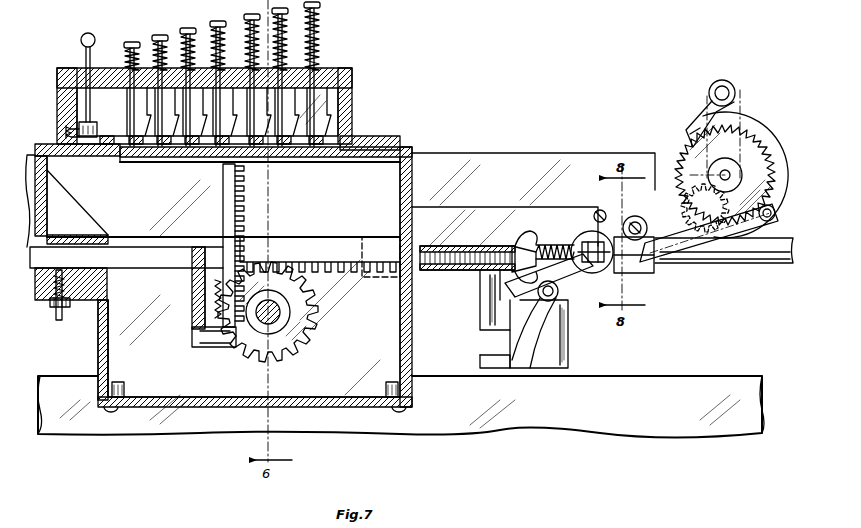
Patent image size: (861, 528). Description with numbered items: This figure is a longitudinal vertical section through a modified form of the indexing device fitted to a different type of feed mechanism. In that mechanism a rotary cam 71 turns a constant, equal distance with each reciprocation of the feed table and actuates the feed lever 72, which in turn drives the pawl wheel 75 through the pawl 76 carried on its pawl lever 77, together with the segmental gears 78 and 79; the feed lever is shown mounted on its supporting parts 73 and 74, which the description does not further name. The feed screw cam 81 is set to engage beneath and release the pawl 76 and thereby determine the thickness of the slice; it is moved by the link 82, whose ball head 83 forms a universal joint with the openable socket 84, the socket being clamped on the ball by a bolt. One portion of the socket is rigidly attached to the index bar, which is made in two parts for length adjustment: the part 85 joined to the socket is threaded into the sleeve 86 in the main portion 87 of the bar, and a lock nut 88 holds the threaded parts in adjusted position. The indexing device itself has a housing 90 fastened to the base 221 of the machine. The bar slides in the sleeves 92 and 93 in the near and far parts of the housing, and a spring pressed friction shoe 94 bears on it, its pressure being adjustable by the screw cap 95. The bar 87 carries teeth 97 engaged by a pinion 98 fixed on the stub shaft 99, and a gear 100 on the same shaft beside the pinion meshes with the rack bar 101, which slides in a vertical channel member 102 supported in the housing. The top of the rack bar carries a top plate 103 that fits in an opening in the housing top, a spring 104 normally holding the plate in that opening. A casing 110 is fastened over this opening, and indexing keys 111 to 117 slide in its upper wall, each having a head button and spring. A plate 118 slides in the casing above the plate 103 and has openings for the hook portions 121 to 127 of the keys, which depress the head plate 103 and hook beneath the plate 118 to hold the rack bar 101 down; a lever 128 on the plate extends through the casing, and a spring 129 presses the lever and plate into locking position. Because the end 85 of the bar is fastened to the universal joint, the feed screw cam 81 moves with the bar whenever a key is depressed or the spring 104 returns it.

The rotary cam 71 is at (556, 340).
The feed lever 72 is at (570, 300).
The bracket 73 is at (480, 300).
The foot 74 is at (495, 347).
The pawl wheel 75 is at (752, 142).
The pawl 76 is at (708, 105).
The pawl lever 77 is at (740, 112).
The segmental gear 78 is at (690, 160).
The segmental gear 79 is at (680, 175).
The feed screw cam 81 is at (782, 150).
The link 82 is at (667, 244).
The ball head 83 is at (634, 273).
The openable socket 84 is at (584, 240).
The part of adjusting bar 85 is at (540, 247).
The sleeve 86 is at (470, 246).
The main portion of adjusting bar 87 is at (150, 268).
The lock nut 88 is at (530, 249).
The housing 90 is at (102, 342).
The sleeve 92 is at (70, 306).
The sleeve 93 is at (390, 237).
The spring pressed friction shoe 94 is at (50, 302).
The screw cap 95 is at (58, 322).
The teeth 97 is at (325, 272).
The pinion 98 is at (319, 317).
The stub shaft 99 is at (280, 350).
The gear 100 is at (306, 332).
The rack bar 101 is at (236, 196).
The vertical channel member 102 is at (192, 322).
The top plate 103 is at (168, 162).
The spring 104 is at (245, 183).
The casing 110 is at (352, 106).
The indexing key 111 is at (130, 70).
The indexing key 117 is at (320, 18).
The plate 118 is at (352, 137).
The hook portion 121 is at (148, 136).
The hook portion 127 is at (313, 106).
The lever 128 is at (80, 40).
The spring 129 is at (70, 126).
The base 221 is at (655, 440).